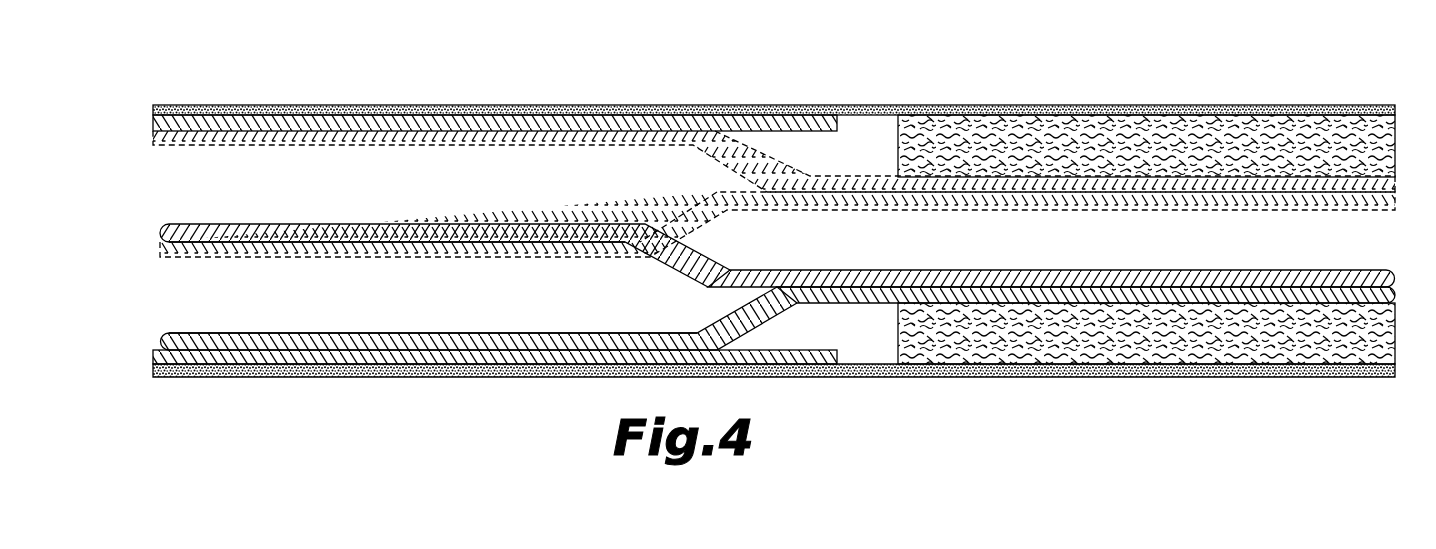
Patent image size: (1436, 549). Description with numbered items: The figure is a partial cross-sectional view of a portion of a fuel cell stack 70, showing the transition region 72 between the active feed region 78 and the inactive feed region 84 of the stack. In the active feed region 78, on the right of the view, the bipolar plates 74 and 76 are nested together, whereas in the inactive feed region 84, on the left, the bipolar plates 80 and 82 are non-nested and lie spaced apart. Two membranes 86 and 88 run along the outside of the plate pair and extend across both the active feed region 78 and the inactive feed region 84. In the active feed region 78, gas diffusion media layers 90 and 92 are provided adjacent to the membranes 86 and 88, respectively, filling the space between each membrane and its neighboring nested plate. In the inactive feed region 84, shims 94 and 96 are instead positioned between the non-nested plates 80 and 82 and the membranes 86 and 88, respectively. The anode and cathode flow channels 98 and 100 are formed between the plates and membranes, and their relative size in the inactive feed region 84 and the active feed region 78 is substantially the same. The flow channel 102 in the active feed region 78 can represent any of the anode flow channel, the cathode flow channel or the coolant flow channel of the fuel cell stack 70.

The fuel cell stack 70 is at (272, 83).
The transition region 72 is at (802, 380).
The nested bipolar plate 74 is at (1393, 275).
The nested bipolar plate 76 is at (1395, 297).
The active feed region 78 is at (1170, 377).
The non-nested bipolar plate 80 is at (157, 232).
The non-nested bipolar plate 82 is at (157, 343).
The inactive feed region 84 is at (385, 385).
The membrane 86 is at (868, 105).
The membrane 88 is at (965, 373).
The gas diffusion media layer 90 is at (1397, 137).
The gas diffusion media layer 92 is at (1325, 343).
The shim 94 is at (153, 116).
The shim 96 is at (153, 360).
The anode flow channel 98 is at (472, 175).
The cathode flow channel 100 is at (520, 305).
The flow channel 102 is at (1180, 237).